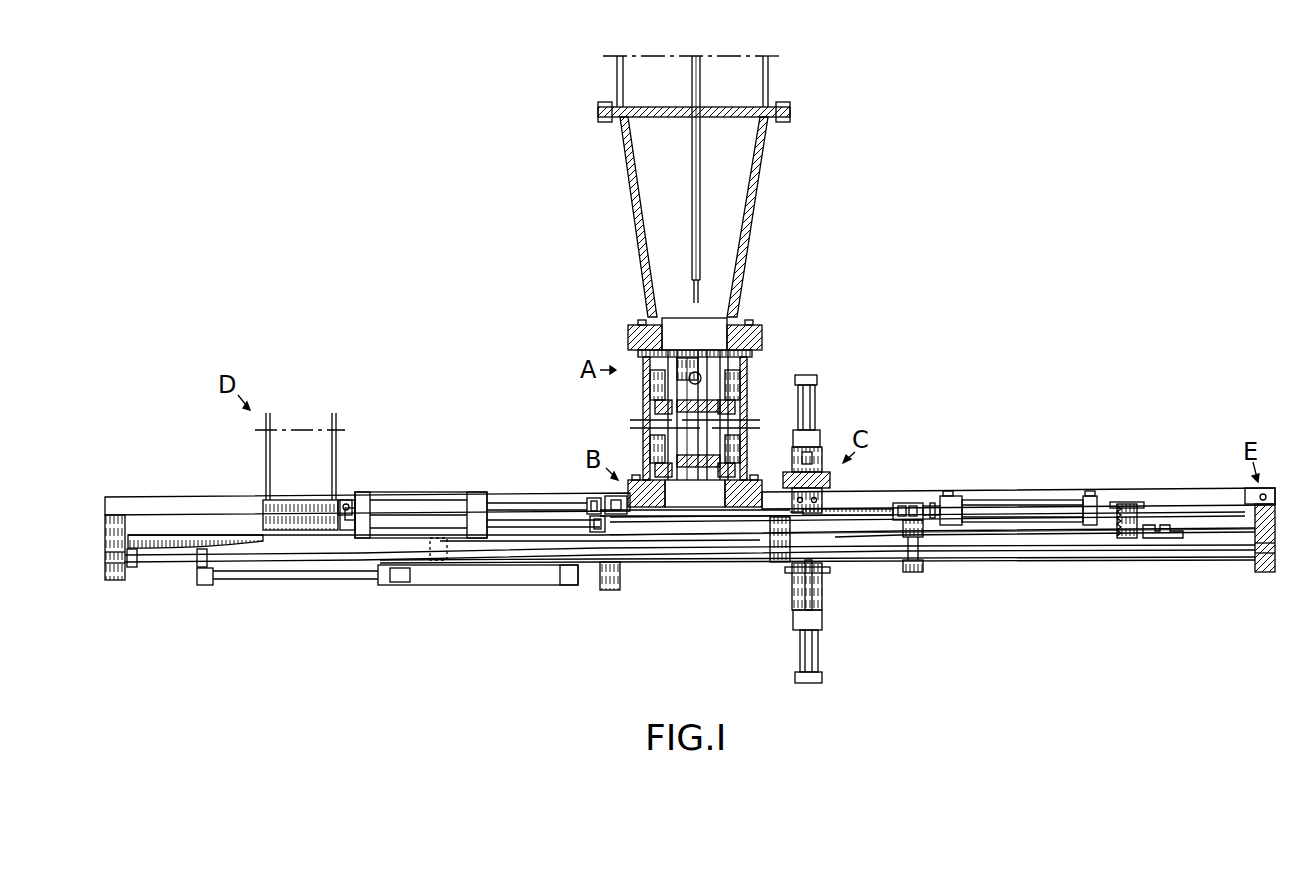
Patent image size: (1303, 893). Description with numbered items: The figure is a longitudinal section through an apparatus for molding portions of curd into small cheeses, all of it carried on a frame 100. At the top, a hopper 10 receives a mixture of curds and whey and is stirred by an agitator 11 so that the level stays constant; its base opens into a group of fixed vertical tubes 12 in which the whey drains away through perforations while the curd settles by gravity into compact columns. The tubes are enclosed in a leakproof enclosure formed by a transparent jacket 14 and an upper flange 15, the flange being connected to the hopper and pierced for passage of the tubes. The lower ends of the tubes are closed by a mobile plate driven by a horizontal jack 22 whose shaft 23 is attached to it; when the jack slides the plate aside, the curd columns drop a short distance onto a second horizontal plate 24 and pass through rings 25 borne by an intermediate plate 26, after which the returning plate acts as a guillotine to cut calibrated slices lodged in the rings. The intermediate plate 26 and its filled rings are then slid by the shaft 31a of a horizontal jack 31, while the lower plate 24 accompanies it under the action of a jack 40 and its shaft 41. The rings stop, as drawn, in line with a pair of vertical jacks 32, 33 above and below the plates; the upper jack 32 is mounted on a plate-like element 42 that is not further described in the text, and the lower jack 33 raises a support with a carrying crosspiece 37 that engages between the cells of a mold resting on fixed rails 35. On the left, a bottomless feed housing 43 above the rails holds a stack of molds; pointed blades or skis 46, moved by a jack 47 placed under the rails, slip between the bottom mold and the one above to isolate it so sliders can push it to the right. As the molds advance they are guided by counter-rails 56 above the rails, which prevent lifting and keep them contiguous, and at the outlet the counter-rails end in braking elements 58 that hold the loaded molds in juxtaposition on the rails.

The hopper 10 is at (640, 180).
The agitator 11 is at (698, 296).
The vertical tubes 12 is at (708, 390).
The transparent jacket 14 is at (643, 394).
The upper flange 15 is at (760, 343).
The horizontal jack 22 is at (410, 500).
The shaft 23 is at (505, 503).
The second horizontal plate 24 is at (770, 525).
The rings 25 is at (834, 508).
The intermediate plate 26 is at (886, 505).
The jack 31 is at (985, 503).
The shaft 31a is at (932, 505).
The upper vertical jack 32 is at (814, 408).
The lower vertical jack 33 is at (818, 652).
The rails 35 is at (607, 556).
The carrying crosspiece 37 is at (830, 570).
The jack 40 is at (402, 540).
The shaft 41 is at (525, 525).
The plate 42 is at (785, 480).
The feed housing 43 is at (266, 462).
The pointed blades 46 is at (148, 535).
The jack 47 is at (428, 585).
The counter-rails 56 is at (996, 540).
The braking elements 58 is at (1170, 534).
The frame 100 is at (1105, 494).